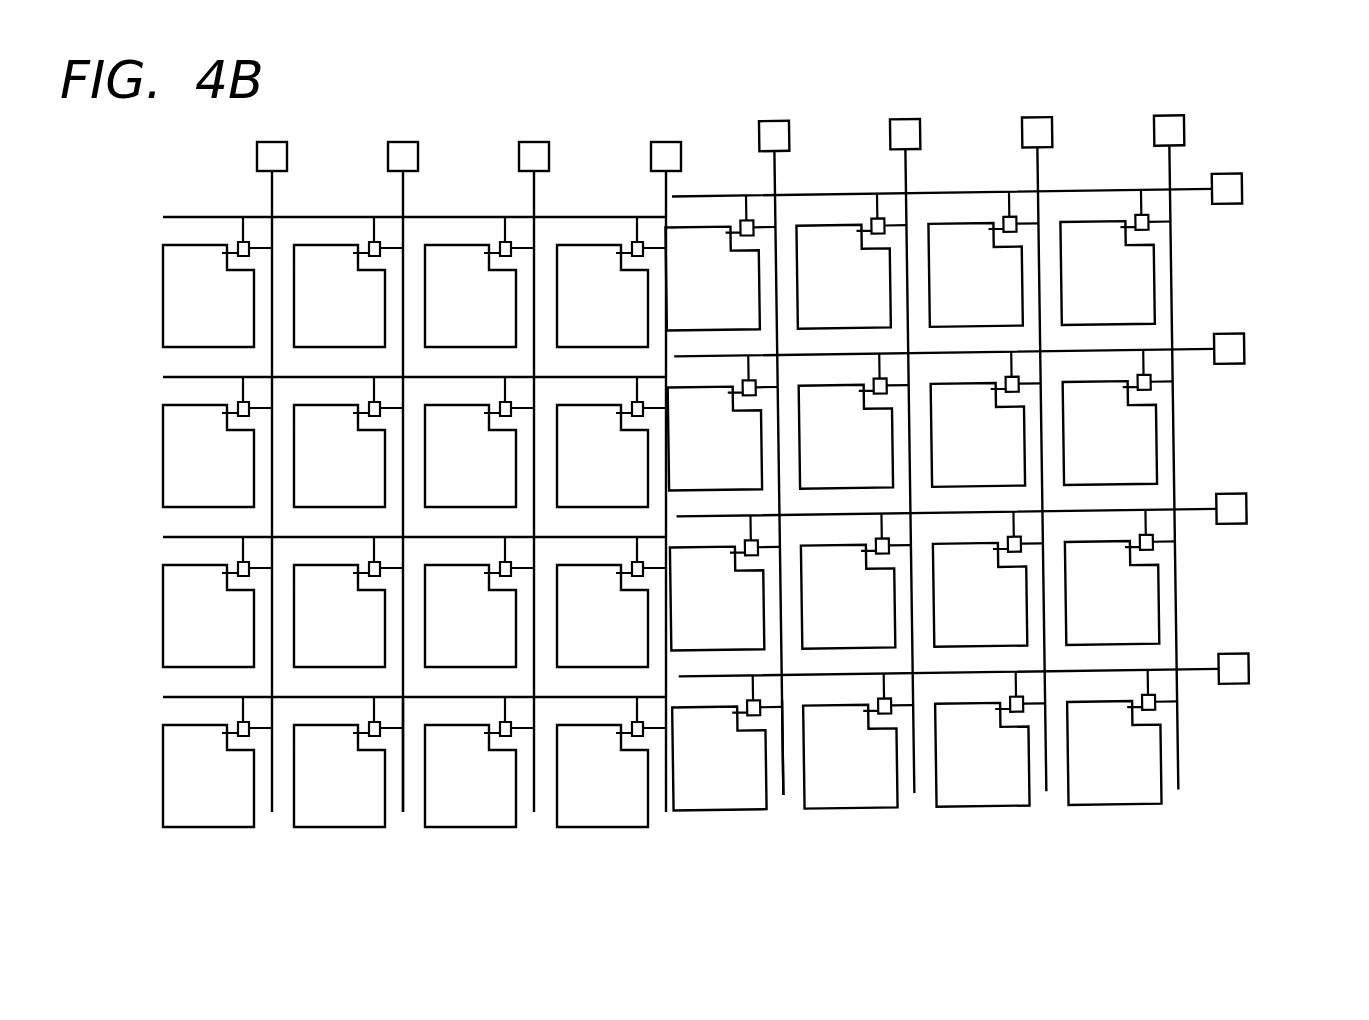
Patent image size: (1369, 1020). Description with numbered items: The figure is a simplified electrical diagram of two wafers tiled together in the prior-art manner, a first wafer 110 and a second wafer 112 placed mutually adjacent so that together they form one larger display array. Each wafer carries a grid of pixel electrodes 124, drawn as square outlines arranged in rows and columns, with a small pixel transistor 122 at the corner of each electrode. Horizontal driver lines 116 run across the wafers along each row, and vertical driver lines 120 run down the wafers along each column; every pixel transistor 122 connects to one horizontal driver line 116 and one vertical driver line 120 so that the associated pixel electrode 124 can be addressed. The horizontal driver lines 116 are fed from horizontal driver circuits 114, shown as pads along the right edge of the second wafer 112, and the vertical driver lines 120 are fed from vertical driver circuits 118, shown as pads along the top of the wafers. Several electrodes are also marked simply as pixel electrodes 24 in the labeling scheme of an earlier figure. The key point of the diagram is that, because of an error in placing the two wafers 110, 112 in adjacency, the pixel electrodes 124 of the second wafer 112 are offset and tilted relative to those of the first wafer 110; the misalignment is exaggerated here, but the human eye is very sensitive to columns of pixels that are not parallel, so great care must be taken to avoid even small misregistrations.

The pixel electrode 24 is at (487, 316).
The first wafer 110 is at (795, 797).
The second wafer 112 is at (411, 797).
The horizontal driver circuits 114 is at (1230, 347).
The horizontal driver lines 116 is at (537, 377).
The vertical driver circuits 118 is at (1172, 137).
The vertical driver lines 120 is at (534, 812).
The pixel transistors 122 is at (243, 242).
The pixel electrodes 124 is at (618, 524).